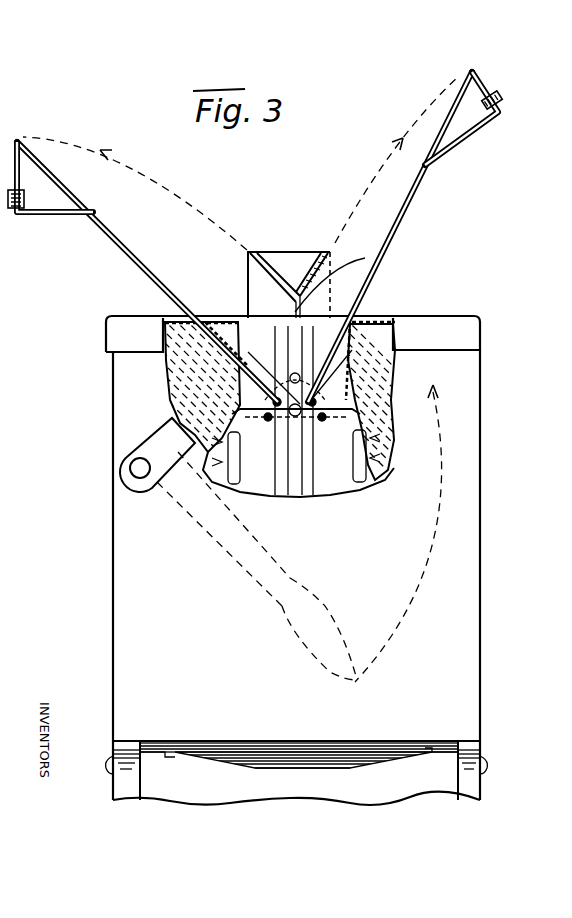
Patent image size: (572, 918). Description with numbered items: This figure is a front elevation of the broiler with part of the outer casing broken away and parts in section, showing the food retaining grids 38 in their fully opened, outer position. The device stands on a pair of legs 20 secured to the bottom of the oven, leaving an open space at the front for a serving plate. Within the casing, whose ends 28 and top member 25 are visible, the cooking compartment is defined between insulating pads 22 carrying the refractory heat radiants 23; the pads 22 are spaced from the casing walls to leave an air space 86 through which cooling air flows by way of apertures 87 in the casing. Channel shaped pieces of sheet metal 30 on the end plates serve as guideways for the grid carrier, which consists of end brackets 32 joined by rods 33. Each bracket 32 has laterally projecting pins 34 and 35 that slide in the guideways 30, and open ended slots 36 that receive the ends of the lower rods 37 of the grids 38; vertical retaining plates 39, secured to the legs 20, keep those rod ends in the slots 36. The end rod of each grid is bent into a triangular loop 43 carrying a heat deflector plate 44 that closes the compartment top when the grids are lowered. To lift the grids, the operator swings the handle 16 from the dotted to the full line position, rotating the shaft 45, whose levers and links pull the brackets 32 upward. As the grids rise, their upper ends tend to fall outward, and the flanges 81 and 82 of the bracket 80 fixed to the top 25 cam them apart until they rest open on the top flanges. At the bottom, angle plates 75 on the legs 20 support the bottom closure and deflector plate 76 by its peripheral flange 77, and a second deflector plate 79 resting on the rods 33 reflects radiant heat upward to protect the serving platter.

The manually operable handle 16 is at (350, 279).
The legs 20 is at (116, 762).
The insulating pads 22 is at (180, 372).
The heat radiants 23 is at (212, 452).
The top member 25 is at (438, 317).
The ends of the casing 28 is at (363, 533).
The channel shaped piece of sheet metal 30 is at (285, 486).
The end brackets 32 is at (252, 416).
The rods 33 is at (321, 430).
The laterally projecting pin 34 is at (299, 376).
The laterally projecting pin 35 is at (291, 428).
The open ended slots 36 is at (338, 400).
The lower rods 37 is at (308, 404).
The grids 38 is at (138, 250).
The retaining plates 39 is at (358, 462).
The loop 43 is at (48, 214).
The heat deflector plate 44 is at (25, 192).
The shaft 45 is at (130, 468).
The angle plates 75 is at (152, 755).
The bottom closure and deflector plate 76 is at (251, 757).
The peripheral flange 77 is at (378, 746).
The second deflector plate 79 is at (334, 416).
The bracket 80 is at (280, 252).
The laterally projecting flange 81 is at (314, 255).
The laterally projecting flange 82 is at (266, 272).
The air space 86 is at (178, 316).
The apertures 87 is at (220, 315).